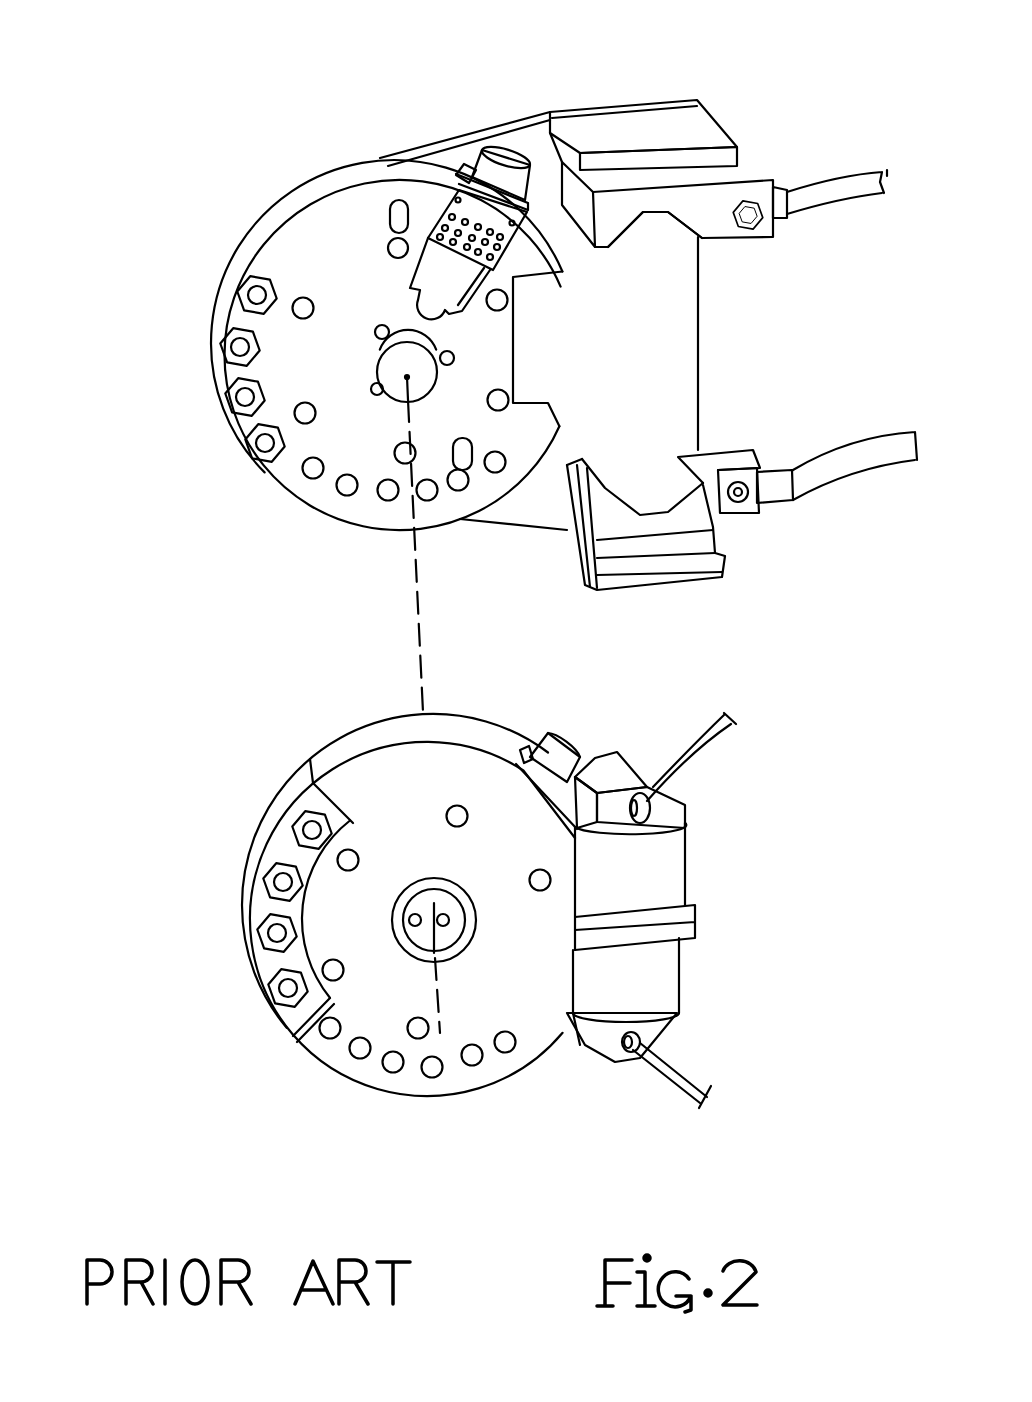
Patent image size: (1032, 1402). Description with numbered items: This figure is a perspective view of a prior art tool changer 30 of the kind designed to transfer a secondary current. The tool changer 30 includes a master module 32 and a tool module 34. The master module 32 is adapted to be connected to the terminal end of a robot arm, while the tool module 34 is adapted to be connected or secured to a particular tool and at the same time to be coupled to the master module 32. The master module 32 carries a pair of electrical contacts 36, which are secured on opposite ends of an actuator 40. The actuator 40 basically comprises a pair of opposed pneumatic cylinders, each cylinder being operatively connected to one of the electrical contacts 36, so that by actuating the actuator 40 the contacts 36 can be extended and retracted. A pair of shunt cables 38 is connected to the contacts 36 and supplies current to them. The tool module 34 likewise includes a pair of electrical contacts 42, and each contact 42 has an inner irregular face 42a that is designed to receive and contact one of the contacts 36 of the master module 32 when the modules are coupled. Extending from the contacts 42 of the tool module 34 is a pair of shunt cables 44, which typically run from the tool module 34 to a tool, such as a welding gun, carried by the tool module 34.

The prior art tool changer 30 is at (227, 55).
The master module 32 is at (460, 1097).
The tool module 34 is at (273, 202).
The electrical contacts 36 is at (622, 762).
The shunt cables 38 is at (712, 747).
The actuator 40 is at (682, 973).
The electrical contacts 42 is at (757, 173).
The inner irregular face 42a is at (650, 212).
The shunt cables 44 is at (837, 205).